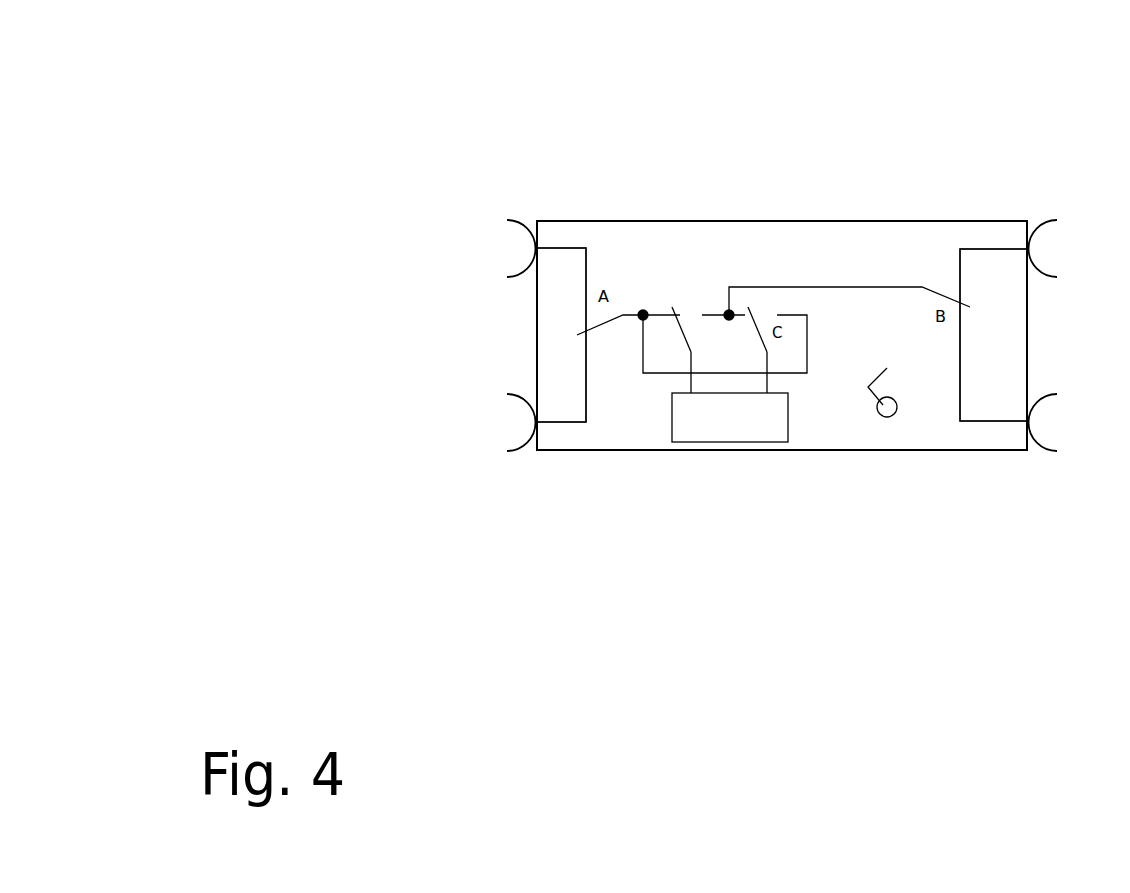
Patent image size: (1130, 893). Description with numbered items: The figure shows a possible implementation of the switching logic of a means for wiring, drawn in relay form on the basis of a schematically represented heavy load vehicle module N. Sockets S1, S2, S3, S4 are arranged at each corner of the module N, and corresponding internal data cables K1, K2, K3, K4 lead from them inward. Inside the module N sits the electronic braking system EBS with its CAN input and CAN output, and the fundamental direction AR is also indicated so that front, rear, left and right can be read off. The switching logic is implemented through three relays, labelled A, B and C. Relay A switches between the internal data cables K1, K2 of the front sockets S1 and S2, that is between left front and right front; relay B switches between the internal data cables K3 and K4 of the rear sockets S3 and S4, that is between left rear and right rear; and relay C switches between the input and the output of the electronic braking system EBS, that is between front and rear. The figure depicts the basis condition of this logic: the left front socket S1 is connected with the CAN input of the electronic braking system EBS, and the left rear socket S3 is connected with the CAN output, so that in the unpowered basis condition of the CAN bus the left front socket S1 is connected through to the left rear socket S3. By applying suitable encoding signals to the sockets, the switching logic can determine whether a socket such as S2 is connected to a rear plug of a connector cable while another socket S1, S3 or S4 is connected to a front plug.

The heavy load vehicle module N is at (797, 222).
The internal data cable K1 is at (565, 422).
The internal data cable K2 is at (990, 249).
The internal data cable K3 is at (990, 422).
The internal data cable K4 is at (562, 248).
The left front socket S1 is at (508, 452).
The right front socket S2 is at (507, 220).
The left rear socket S3 is at (1047, 452).
The right rear socket S4 is at (1052, 222).
The electronic braking system EBS is at (725, 427).
The fundamental direction AR is at (880, 418).